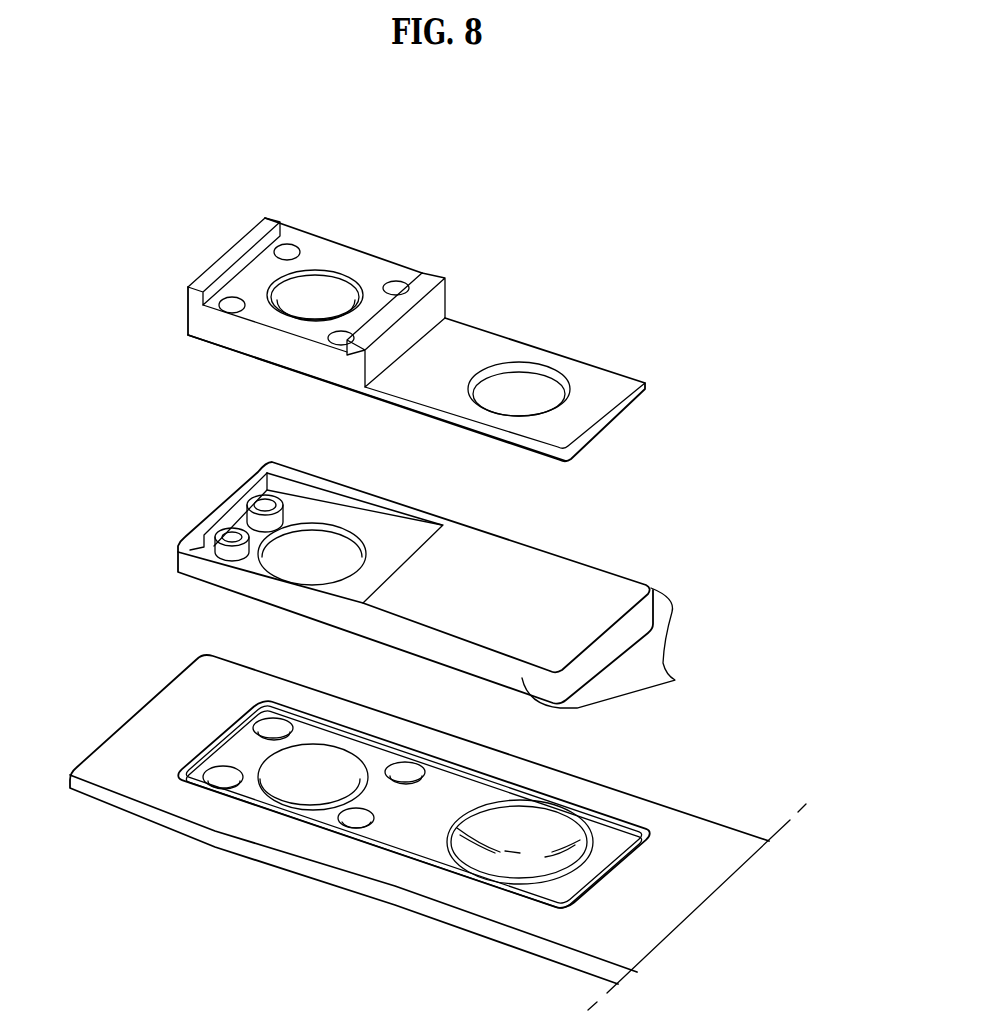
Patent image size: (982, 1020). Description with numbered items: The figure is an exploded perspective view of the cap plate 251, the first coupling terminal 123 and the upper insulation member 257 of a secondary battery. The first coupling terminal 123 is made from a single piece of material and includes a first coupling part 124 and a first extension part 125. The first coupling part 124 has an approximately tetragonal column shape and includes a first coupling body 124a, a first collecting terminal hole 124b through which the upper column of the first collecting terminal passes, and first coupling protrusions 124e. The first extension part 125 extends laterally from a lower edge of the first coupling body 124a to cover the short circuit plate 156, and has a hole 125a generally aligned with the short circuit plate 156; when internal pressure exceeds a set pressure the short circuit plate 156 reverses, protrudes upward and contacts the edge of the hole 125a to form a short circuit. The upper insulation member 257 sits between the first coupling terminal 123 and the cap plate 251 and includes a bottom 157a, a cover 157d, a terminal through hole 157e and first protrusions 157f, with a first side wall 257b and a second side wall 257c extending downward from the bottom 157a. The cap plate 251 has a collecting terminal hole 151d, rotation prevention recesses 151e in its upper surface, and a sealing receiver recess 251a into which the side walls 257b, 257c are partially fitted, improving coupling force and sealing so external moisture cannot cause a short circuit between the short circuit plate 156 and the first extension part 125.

The first coupling terminal 123 is at (467, 323).
The first coupling part 124 is at (371, 323).
The first coupling body 124a is at (250, 338).
The first collecting terminal hole 124b is at (318, 290).
The first coupling protrusions 124e is at (428, 280).
The first extension part 125 is at (416, 367).
The hole 125a is at (540, 383).
The upper insulation member 257 is at (437, 581).
The bottom 157a is at (390, 547).
The cover 157d is at (557, 580).
The terminal through hole 157e is at (300, 564).
The first protrusions 157f is at (213, 538).
The second side wall 257c is at (220, 507).
The first side wall 257b is at (618, 650).
The cap plate 251 is at (438, 832).
The sealing receiver recess 251a is at (208, 755).
The rotation prevention recesses 151e is at (220, 778).
The collecting terminal hole 151d is at (312, 783).
The short circuit plate 156 is at (505, 850).